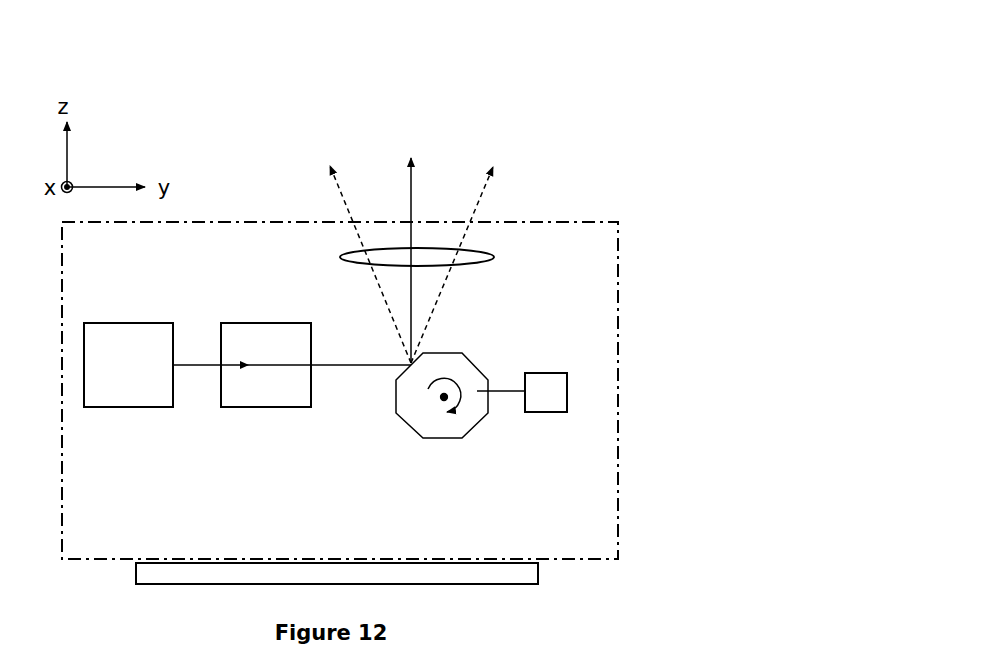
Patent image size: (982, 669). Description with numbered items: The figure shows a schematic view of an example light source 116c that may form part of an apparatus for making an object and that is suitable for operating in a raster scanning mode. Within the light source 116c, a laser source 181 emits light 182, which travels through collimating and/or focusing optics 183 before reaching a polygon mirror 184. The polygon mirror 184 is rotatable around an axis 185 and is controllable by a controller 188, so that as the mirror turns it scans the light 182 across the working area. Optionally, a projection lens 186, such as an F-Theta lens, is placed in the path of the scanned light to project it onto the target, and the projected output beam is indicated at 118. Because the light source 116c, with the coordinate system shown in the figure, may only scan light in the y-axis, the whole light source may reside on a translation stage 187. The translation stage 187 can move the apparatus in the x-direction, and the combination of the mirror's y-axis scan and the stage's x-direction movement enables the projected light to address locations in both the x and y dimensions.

The light source 116c is at (257, 200).
The scanned output beam 118 is at (493, 183).
The laser source 181 is at (135, 407).
The light 182 is at (205, 366).
The collimating and/or focusing optics 183 is at (260, 407).
The polygon mirror 184 is at (485, 418).
The axis 185 is at (442, 400).
The projection lens 186 is at (493, 258).
The translation stage 187 is at (533, 575).
The controller 188 is at (553, 400).